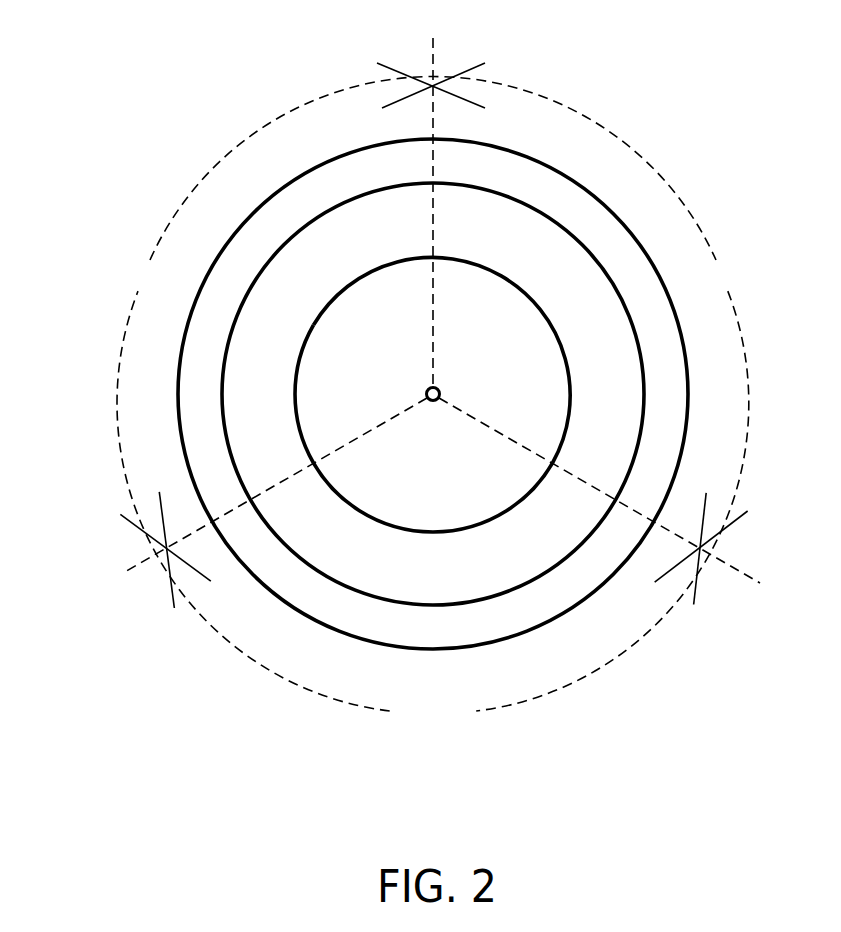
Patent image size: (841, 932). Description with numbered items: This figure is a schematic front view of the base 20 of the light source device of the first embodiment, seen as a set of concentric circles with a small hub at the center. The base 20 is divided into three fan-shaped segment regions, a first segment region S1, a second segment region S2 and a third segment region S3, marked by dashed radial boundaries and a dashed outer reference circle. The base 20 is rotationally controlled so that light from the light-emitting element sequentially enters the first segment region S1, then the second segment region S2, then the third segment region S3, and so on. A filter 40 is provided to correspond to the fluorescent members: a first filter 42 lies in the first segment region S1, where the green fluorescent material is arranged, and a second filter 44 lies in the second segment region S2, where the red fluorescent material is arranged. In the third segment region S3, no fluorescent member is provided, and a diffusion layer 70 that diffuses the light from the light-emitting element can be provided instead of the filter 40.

The base 20 is at (520, 177).
The diffusion layer 70 is at (260, 410).
The filter 40 is at (522, 408).
The first filter 42 is at (560, 273).
The second filter 44 is at (568, 508).
The first segment region S1 is at (710, 250).
The second segment region S2 is at (440, 708).
The third segment region S3 is at (153, 251).